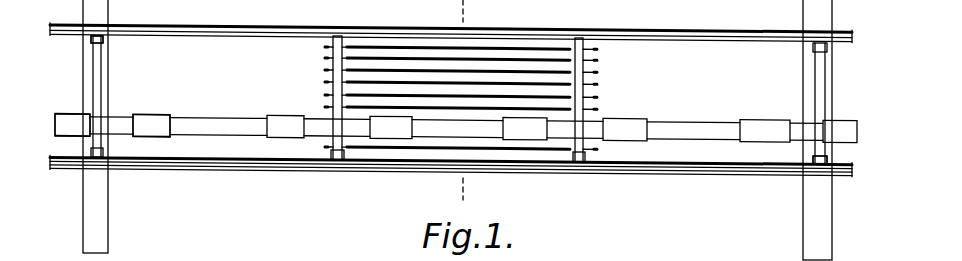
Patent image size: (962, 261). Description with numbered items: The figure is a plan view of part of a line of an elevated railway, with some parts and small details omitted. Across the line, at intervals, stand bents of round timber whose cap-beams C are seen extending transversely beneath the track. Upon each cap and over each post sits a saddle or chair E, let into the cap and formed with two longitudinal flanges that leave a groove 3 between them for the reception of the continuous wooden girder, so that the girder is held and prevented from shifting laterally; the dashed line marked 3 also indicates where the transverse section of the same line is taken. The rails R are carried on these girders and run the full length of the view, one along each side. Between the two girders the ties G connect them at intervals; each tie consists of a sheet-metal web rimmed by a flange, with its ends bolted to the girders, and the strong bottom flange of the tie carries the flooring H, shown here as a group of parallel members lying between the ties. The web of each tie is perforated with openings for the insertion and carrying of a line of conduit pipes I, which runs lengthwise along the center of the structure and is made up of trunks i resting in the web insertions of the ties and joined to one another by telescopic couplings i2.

The rail R is at (257, 32).
The cap-beam C is at (97, 205).
The tie G is at (97, 75).
The conduit pipe I is at (213, 125).
The trunk i is at (69, 122).
The telescopic coupling i2 is at (151, 122).
The flooring H is at (365, 60).
The saddle or chair E is at (100, 14).
The groove 3 is at (459, 105).